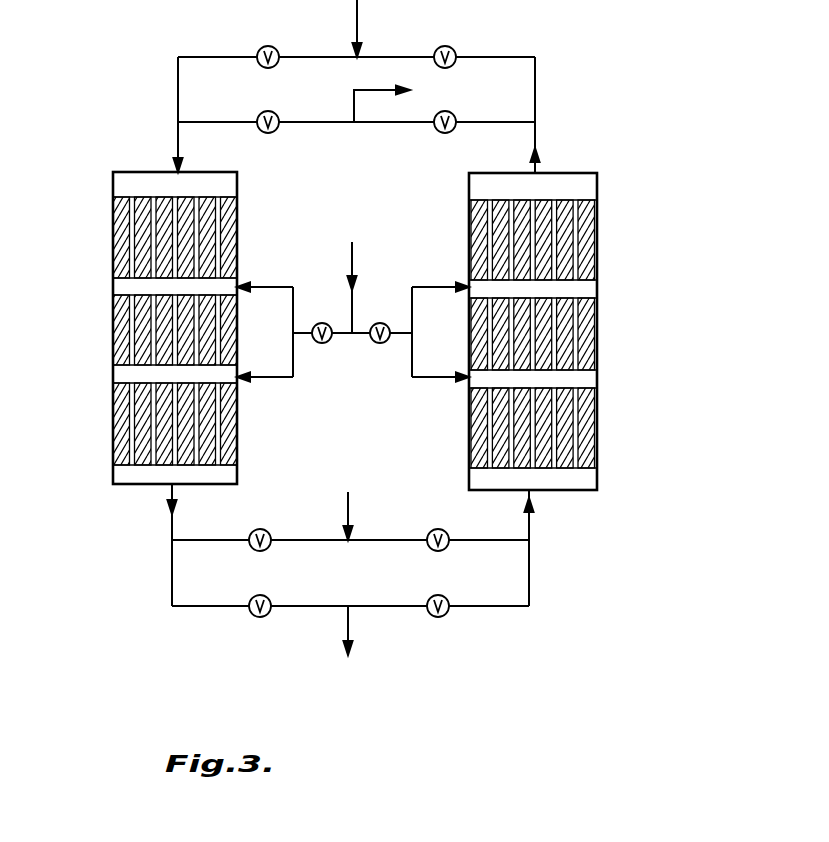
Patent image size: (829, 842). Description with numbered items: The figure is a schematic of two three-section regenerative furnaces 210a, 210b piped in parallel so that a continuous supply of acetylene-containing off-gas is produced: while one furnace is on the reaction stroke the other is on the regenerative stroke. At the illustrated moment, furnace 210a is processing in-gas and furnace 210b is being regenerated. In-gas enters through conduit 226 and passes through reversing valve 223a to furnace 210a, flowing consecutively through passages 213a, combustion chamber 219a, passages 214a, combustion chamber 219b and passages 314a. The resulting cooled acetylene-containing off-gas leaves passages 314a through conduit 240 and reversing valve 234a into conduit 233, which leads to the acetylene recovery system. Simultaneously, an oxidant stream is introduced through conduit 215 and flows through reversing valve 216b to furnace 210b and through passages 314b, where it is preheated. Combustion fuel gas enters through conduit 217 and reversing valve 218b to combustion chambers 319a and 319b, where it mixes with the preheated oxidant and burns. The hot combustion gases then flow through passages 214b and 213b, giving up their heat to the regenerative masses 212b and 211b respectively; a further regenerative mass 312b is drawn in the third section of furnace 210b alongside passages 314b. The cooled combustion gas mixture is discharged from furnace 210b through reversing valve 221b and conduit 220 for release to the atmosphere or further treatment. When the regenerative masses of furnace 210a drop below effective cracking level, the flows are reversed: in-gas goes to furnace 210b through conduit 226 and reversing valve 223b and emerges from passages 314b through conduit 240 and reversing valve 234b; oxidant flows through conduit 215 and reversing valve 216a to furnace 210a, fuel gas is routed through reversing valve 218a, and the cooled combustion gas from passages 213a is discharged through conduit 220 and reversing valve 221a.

The conduit 226 is at (360, 20).
The reversing valve 223a is at (258, 50).
The reversing valve 223b is at (455, 50).
The conduit 220 is at (353, 103).
The reversing valve 221a is at (261, 133).
The reversing valve 221b is at (440, 134).
The furnace 210a is at (108, 204).
The furnace 210b is at (465, 205).
The passages 213a is at (155, 240).
The passages 213b is at (555, 208).
The regenerative mass 211b is at (580, 250).
The passages 214a is at (155, 335).
The passages 214b is at (555, 316).
The regenerative mass 212b is at (560, 354).
The passages 314a is at (145, 418).
The passages 314b is at (555, 412).
The electrode 312b is at (560, 447).
The combustion chamber 219a is at (230, 286).
The combustion chamber 219b is at (215, 378).
The combustion chamber 319a is at (500, 290).
The combustion chamber 319b is at (485, 380).
The conduit 217 is at (380, 225).
The reversing valve 218a is at (322, 343).
The reversing valve 218b is at (380, 343).
The conduit 215 is at (350, 496).
The reversing valve 216a is at (262, 528).
The reversing valve 216b is at (441, 529).
The conduit 240 is at (308, 604).
The reversing valve 234a is at (257, 617).
The reversing valve 234b is at (440, 617).
The conduit 233 is at (345, 632).